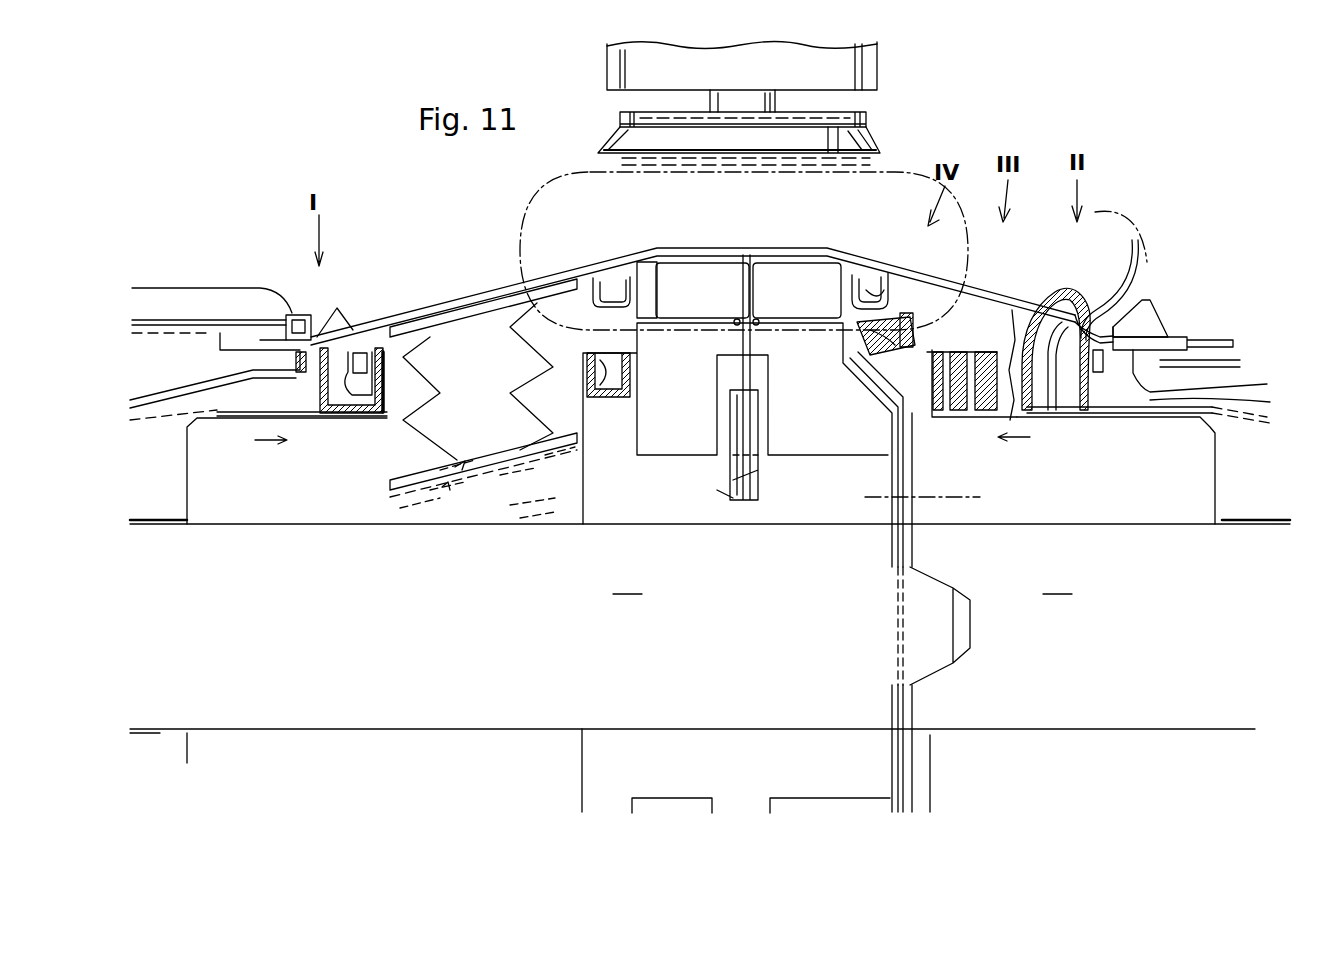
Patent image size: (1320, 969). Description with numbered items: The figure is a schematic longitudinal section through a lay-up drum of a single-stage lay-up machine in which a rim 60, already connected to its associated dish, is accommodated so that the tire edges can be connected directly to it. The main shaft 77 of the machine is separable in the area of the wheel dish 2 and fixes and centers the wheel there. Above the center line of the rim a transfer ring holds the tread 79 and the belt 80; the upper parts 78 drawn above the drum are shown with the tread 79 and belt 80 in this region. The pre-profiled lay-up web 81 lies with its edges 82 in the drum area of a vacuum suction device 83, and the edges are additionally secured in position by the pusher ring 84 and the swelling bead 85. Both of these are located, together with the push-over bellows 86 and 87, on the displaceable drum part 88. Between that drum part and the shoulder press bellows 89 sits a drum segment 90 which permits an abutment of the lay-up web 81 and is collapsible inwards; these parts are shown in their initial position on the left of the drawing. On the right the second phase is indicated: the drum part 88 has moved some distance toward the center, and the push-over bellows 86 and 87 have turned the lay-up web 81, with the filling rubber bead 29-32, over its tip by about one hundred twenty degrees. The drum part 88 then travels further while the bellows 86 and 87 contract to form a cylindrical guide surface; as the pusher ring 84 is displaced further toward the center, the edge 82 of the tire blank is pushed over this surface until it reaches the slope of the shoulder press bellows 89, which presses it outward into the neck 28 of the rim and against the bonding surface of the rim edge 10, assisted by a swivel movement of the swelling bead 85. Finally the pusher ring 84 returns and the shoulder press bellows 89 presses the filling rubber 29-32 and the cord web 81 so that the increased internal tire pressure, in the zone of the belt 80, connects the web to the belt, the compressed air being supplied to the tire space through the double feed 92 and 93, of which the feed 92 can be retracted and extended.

The wheel dish 2 is at (892, 436).
The rim edge 10 is at (873, 300).
The neck of the rim 28 is at (855, 272).
The filling rubber bead 29-32 is at (340, 320).
The rim 60 is at (820, 262).
The main shaft 77 is at (710, 666).
The flange 78 is at (848, 66).
The tread 79 is at (848, 143).
The belt 80 is at (855, 165).
The lay-up web 81 is at (472, 300).
The edges of the lay-up web 82 is at (304, 352).
The vacuum suction device 83 is at (300, 372).
The pusher ring 84 is at (163, 307).
The swelling bead 85 is at (295, 327).
The push-over bellows 86 is at (345, 395).
The push-over bellows 87 is at (380, 405).
The drum part 88 is at (172, 475).
The shoulder press bellows 89 is at (583, 357).
The drum segment 90 is at (432, 330).
The feed 92 is at (755, 320).
The feed 93 is at (737, 320).